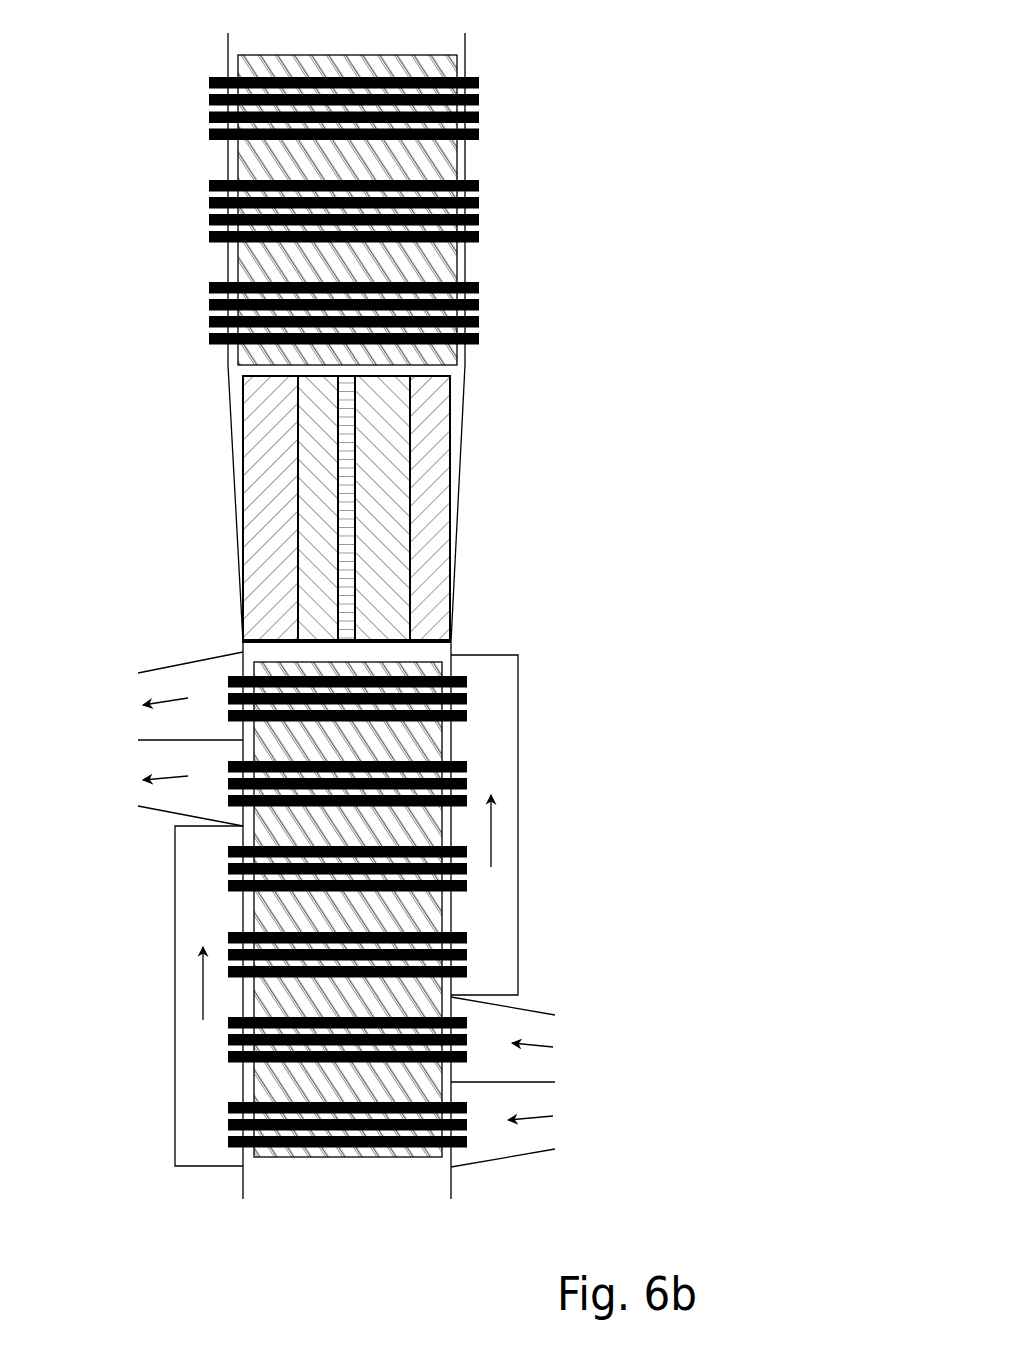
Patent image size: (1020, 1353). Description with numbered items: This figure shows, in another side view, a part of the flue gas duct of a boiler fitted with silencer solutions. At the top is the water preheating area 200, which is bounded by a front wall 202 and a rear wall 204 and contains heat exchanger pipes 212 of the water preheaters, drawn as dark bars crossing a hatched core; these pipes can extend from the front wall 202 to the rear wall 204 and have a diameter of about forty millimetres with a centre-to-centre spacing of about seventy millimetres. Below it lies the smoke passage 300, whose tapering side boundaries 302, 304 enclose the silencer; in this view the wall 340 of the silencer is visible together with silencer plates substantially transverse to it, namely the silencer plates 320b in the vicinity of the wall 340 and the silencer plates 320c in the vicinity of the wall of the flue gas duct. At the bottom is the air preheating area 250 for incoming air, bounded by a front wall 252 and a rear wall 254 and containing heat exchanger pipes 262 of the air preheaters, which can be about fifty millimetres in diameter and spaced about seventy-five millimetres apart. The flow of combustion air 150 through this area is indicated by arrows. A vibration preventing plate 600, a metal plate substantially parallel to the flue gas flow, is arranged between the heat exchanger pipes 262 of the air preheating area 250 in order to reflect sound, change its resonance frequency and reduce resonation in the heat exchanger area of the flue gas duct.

The water preheating area 200 is at (630, 68).
The front wall 202 is at (487, 158).
The rear wall 204 is at (217, 154).
The heat exchanger pipes 212 is at (478, 333).
The smoke passage 300 is at (567, 497).
The right side wall 302 is at (468, 490).
The left side wall 304 is at (213, 565).
The silencer plates 320b is at (318, 482).
The silencer plates 320c is at (263, 428).
The wall 340 is at (348, 522).
The air preheating area 250 is at (620, 925).
The front wall 252 is at (477, 908).
The rear wall 254 is at (215, 1078).
The heat exchanger pipes 262 is at (465, 675).
The vibration preventing plate 600 is at (280, 911).
The combustion air 150 is at (350, 909).